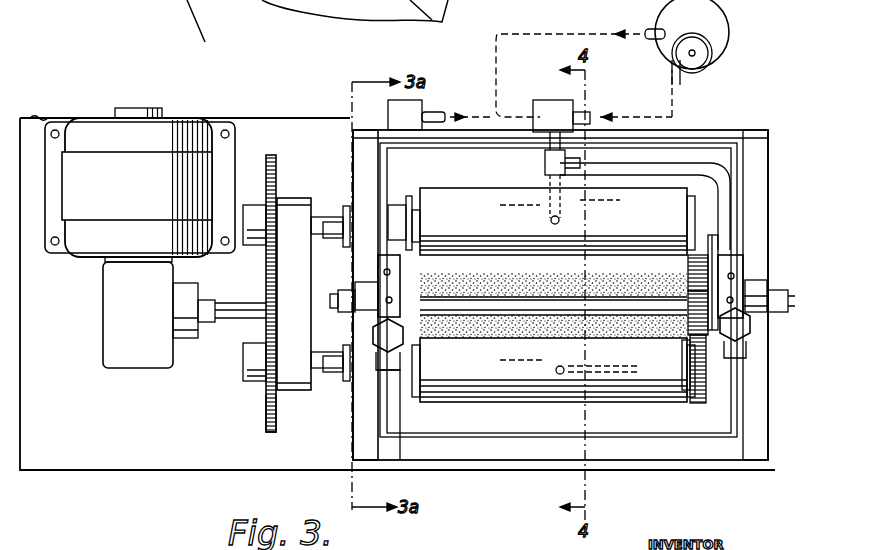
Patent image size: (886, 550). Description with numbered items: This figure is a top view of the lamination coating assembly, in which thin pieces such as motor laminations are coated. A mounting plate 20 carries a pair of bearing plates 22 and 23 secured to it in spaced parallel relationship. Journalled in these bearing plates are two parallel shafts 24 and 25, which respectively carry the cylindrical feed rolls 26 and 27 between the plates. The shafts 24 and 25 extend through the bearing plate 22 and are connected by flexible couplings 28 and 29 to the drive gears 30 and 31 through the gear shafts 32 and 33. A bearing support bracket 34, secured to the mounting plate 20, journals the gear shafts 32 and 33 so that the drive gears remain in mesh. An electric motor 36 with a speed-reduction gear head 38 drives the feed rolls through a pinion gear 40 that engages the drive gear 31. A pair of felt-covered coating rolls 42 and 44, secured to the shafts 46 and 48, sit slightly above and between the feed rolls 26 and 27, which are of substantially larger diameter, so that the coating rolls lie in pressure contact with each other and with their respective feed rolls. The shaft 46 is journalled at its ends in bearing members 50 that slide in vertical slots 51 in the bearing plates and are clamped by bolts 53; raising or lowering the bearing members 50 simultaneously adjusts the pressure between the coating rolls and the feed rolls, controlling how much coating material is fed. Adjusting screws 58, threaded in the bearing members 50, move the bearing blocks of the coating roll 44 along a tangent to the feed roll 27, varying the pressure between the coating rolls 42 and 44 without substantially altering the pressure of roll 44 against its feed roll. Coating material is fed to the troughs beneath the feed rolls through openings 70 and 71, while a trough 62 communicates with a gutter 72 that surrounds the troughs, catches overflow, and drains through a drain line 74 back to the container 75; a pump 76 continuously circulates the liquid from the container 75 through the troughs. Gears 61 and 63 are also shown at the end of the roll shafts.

The mounting plate 20 is at (313, 460).
The bearing plate 22 is at (378, 153).
The bearing plate 23 is at (760, 168).
The shaft 24 is at (392, 218).
The shaft 25 is at (379, 373).
The feed roll 26 is at (450, 196).
The feed roll 27 is at (480, 391).
The flexible coupling 28 is at (334, 215).
The flexible coupling 29 is at (332, 354).
The drive gear 30 is at (278, 160).
The drive gear 31 is at (266, 425).
The gear shaft 32 is at (245, 205).
The gear shaft 33 is at (243, 363).
The bearing support bracket 34 is at (297, 383).
The electric motor 36 is at (203, 125).
The speed-reduction gear head 38 is at (108, 333).
The pinion gear 40 is at (262, 325).
The felt-covered roll 42 is at (458, 274).
The felt-covered roll 44 is at (505, 324).
The shaft 46 is at (718, 258).
The shaft 48 is at (750, 316).
The bearing member 50 is at (735, 280).
The vertical slot 51 is at (761, 291).
The bolt 53 is at (780, 308).
The adjusting screw 58 is at (386, 338).
The gear 61 is at (690, 273).
The trough 62 is at (688, 309).
The gear 63 is at (702, 398).
The opening 70 is at (560, 224).
The opening 71 is at (557, 370).
The gutter 72 is at (723, 198).
The drain line 74 is at (590, 117).
The container 75 is at (722, 32).
The pump 76 is at (702, 68).